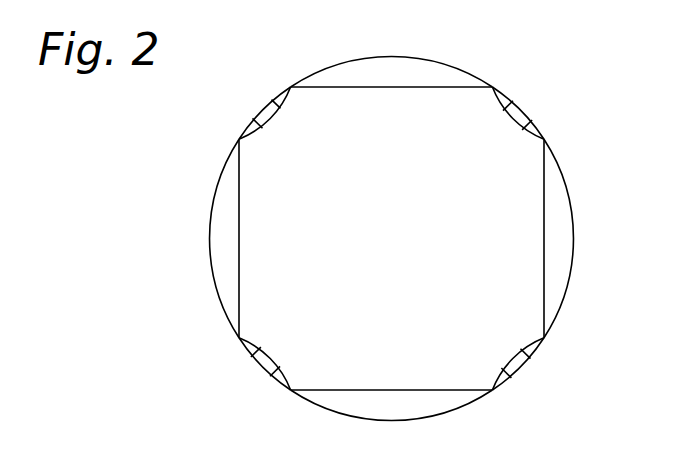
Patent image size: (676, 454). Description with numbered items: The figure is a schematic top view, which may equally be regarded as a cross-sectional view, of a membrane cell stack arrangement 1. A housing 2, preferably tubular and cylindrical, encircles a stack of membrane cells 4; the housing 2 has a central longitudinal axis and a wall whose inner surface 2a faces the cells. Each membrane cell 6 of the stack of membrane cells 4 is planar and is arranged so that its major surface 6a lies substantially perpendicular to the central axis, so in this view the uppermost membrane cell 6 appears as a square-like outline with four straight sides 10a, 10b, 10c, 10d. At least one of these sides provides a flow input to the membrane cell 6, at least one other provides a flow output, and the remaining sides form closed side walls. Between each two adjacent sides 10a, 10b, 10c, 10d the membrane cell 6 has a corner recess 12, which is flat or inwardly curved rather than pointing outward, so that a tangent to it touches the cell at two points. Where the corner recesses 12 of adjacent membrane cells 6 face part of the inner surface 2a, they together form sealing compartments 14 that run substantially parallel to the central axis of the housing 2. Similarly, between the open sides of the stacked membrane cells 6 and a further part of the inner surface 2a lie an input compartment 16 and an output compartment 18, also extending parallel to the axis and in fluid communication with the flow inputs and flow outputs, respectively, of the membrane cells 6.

The membrane cell stack arrangement 1 is at (186, 169).
The housing 2 is at (260, 111).
The inner surface 2a is at (229, 165).
The stack of membrane cells 4 is at (480, 100).
The membrane cell 6 is at (267, 293).
The major surface 6a is at (517, 272).
The side 10a is at (382, 390).
The side 10b is at (238, 203).
The side 10c is at (427, 87).
The side 10d is at (545, 297).
The corner recess 12 is at (262, 130).
The sealing compartment 14 is at (280, 103).
The input compartment 16 is at (558, 232).
The output compartment 18 is at (350, 75).